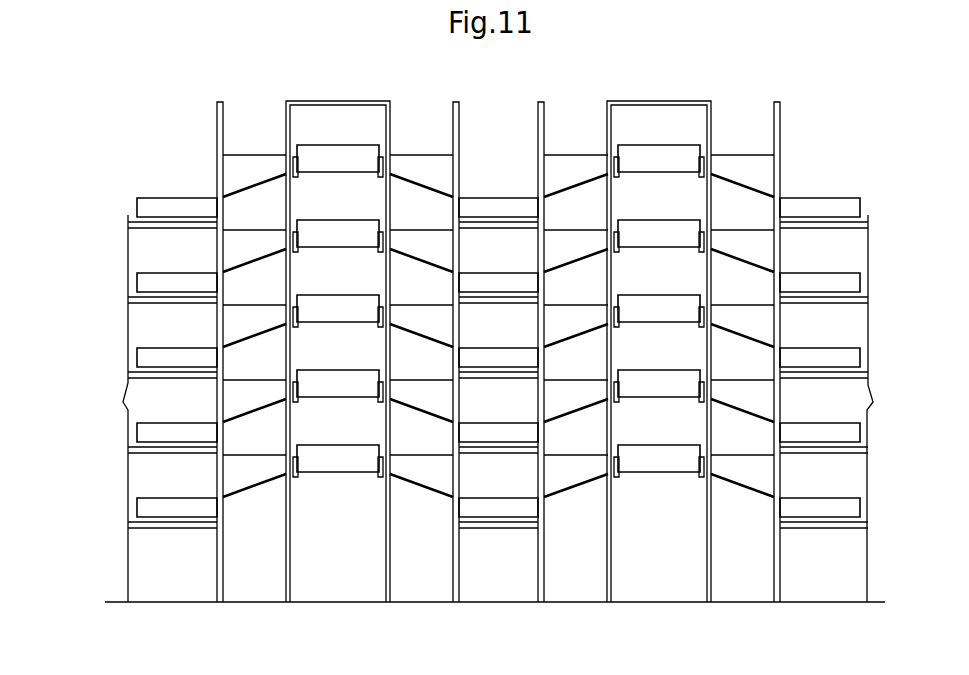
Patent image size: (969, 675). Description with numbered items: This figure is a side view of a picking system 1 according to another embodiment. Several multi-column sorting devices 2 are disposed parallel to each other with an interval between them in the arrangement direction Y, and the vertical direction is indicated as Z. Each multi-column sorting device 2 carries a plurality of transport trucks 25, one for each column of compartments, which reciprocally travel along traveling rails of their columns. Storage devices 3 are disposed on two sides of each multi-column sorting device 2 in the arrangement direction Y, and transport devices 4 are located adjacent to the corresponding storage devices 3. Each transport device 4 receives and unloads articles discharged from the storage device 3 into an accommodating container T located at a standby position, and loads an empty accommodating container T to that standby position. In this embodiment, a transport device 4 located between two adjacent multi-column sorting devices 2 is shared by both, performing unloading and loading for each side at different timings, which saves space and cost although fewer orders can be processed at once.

The picking system 1 is at (130, 93).
The multi-column sorting device 2 is at (340, 94).
The storage device 3 is at (257, 143).
The transport device 4 is at (180, 190).
The transport truck 25 is at (327, 233).
The accommodating container T is at (147, 273).
The arrangement direction Y is at (595, 647).
The vertical direction Z is at (85, 278).